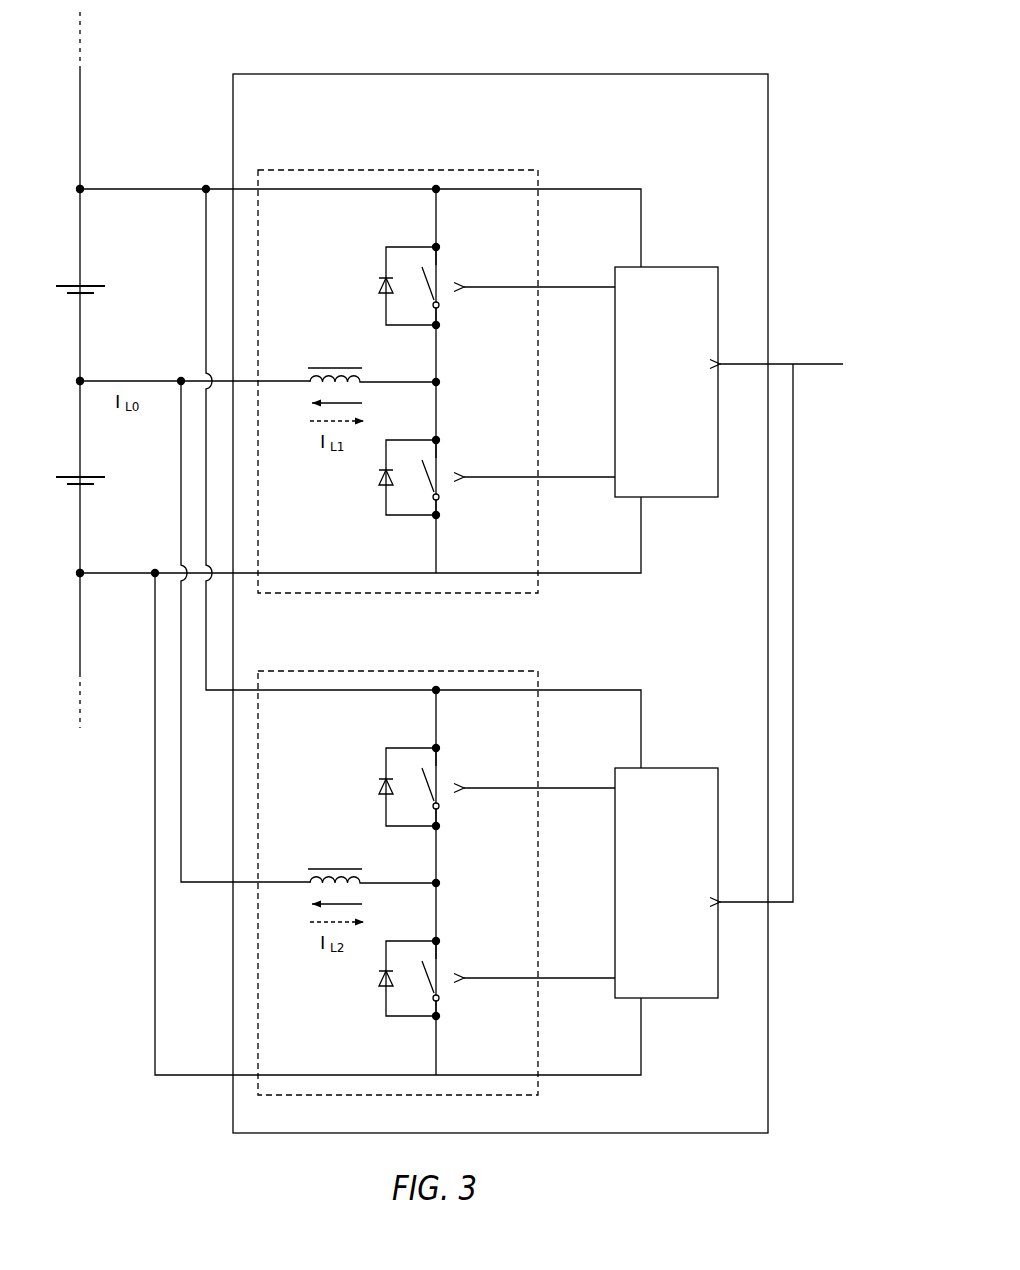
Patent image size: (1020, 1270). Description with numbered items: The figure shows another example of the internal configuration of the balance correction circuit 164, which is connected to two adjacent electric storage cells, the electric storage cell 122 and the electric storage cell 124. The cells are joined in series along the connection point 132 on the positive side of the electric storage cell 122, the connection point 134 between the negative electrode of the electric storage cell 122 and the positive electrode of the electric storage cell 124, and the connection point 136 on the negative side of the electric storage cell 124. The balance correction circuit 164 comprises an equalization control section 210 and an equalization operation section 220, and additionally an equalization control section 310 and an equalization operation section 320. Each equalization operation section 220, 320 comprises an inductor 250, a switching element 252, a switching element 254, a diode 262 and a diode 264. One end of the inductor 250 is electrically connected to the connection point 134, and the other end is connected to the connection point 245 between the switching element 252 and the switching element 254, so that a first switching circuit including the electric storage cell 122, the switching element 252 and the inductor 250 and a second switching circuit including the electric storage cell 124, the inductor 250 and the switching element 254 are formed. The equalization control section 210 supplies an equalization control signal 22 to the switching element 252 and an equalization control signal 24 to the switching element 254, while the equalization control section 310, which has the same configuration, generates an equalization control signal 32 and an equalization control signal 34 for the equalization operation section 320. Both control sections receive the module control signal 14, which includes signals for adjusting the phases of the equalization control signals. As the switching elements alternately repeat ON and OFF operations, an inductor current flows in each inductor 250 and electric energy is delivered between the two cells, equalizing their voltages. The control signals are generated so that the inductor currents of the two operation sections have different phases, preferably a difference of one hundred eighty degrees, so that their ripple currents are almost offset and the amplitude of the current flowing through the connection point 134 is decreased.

The module control signal 14 is at (818, 363).
The equalization control signal 22 is at (563, 287).
The equalization control signal 24 is at (563, 477).
The equalization control signal 32 is at (563, 788).
The equalization control signal 34 is at (563, 978).
The electric storage cell 122 is at (85, 282).
The electric storage cell 124 is at (85, 473).
The connection point 132 is at (85, 185).
The connection point 134 is at (85, 377).
The connection point 136 is at (85, 569).
The balance correction circuit 164 is at (655, 74).
The equalization control section 210 is at (683, 267).
The equalization operation section 220 is at (462, 594).
The connection point 245 is at (442, 379).
The inductor 250 is at (336, 356).
The switching element 252 is at (447, 281).
The switching element 254 is at (447, 474).
The diode 262 is at (378, 271).
The diode 264 is at (376, 495).
The equalization control section 310 is at (683, 768).
The equalization operation section 320 is at (283, 672).